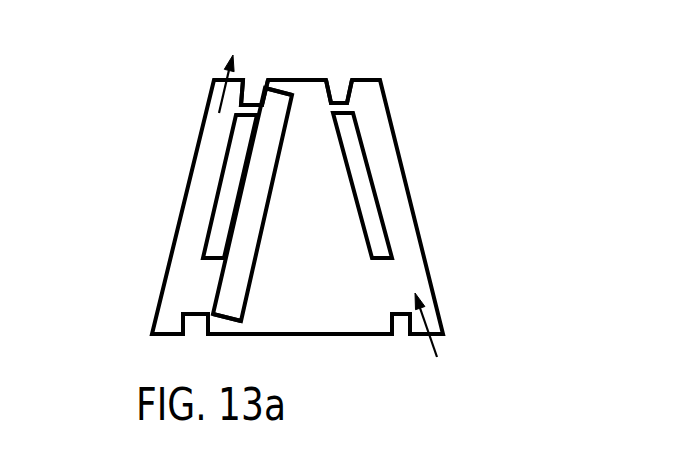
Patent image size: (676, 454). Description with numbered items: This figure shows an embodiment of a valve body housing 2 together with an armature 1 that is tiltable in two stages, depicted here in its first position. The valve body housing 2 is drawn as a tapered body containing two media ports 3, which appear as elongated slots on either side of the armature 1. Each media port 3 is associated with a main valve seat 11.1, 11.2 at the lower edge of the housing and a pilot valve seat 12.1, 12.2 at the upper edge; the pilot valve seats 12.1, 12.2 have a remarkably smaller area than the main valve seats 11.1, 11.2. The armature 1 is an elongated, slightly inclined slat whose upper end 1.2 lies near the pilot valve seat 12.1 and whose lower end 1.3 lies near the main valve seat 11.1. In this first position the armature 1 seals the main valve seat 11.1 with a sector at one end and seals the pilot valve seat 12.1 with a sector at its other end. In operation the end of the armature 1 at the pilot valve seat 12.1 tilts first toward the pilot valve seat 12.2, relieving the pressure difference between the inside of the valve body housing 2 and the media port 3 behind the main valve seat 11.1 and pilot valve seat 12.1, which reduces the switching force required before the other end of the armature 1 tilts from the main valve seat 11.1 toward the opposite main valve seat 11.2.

The armature 1 is at (265, 170).
The upper end of slat 1.2 is at (296, 96).
The lower end of slat 1.3 is at (225, 302).
The valve body housing 2 is at (397, 142).
The media port 3 is at (195, 212).
The main valve seat 11.1 is at (202, 290).
The main valve seat 11.2 is at (390, 288).
The pilot valve seat 12.1 is at (247, 108).
The pilot valve seat 12.2 is at (335, 110).